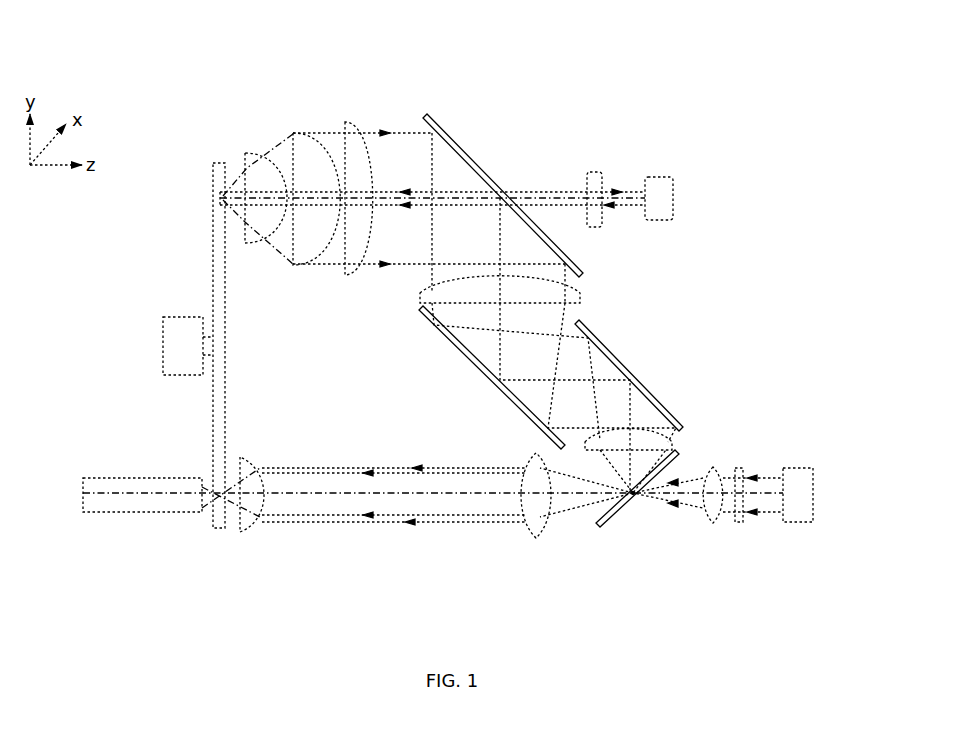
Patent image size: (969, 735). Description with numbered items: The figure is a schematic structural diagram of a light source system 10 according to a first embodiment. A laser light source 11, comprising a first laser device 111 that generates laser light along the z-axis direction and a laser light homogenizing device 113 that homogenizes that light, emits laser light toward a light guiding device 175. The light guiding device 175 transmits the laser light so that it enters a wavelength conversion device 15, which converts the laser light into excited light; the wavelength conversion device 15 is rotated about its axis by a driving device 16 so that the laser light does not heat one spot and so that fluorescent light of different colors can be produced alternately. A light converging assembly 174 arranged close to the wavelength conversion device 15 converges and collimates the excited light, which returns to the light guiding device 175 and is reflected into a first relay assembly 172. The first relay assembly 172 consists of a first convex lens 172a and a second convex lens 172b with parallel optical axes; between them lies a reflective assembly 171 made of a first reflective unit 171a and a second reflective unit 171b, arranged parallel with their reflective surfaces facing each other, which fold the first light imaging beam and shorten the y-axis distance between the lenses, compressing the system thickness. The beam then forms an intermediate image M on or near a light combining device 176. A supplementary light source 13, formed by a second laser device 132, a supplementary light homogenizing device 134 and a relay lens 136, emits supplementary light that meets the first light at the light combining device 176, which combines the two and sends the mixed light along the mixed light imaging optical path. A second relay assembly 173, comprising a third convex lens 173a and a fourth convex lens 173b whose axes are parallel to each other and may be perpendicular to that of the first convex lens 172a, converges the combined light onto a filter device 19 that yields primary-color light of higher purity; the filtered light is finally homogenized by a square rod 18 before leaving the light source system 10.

The light source system 10 is at (97, 25).
The laser light source 11 is at (669, 161).
The first laser device 111 is at (673, 197).
The laser light homogenizing device 113 is at (595, 172).
The supplementary light source 13 is at (760, 494).
The second laser device 132 is at (800, 522).
The supplementary light homogenizing device 134 is at (740, 523).
The relay lens 136 is at (712, 523).
The wavelength conversion device 15 is at (213, 197).
The driving device 16 is at (167, 313).
The square rod 18 is at (130, 477).
The filter device 19 is at (213, 520).
The reflective assembly 171 is at (533, 377).
The first reflective unit 171a is at (482, 373).
The second reflective unit 171b is at (618, 367).
The first relay assembly 172 is at (591, 342).
The first convex lens 172a is at (580, 295).
The second convex lens 172b is at (673, 435).
The second relay assembly 173 is at (395, 542).
The third convex lens 173a is at (537, 535).
The fourth convex lens 173b is at (284, 517).
The light converging assembly 174 is at (290, 123).
The light guiding device 175 is at (470, 153).
The light combining device 176 is at (677, 457).
The intermediate image M is at (592, 523).